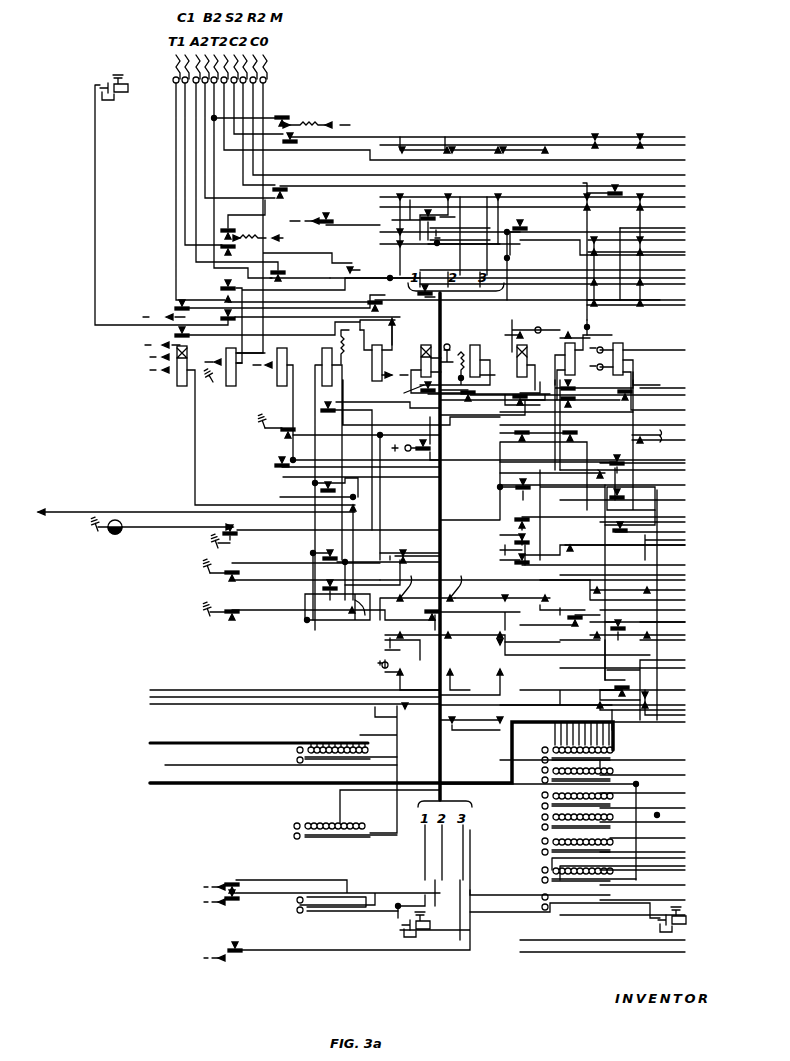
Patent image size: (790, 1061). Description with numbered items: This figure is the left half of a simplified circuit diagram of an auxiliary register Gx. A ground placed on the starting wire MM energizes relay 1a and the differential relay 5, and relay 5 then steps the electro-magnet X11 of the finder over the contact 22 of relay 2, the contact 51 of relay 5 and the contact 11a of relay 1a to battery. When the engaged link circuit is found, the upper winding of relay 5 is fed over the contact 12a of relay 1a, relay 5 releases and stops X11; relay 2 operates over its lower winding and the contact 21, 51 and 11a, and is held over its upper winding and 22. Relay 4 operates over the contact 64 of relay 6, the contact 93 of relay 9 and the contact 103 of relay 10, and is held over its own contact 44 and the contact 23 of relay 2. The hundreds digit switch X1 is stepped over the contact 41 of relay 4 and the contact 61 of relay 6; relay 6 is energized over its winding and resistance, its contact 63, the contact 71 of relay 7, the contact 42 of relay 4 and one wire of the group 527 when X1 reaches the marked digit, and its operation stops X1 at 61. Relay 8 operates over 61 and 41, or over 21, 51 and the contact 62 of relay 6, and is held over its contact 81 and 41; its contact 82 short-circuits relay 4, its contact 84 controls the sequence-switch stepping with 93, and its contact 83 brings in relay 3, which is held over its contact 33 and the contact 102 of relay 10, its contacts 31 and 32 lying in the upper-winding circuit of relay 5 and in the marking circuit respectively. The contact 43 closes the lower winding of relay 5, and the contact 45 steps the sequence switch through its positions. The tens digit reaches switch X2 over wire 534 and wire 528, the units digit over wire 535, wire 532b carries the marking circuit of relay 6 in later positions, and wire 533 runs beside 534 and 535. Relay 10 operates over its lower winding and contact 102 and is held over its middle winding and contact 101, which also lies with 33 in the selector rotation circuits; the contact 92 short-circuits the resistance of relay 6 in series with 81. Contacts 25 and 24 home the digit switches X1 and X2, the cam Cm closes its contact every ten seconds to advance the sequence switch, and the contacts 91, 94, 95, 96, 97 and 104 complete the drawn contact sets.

The relay 1a is at (252, 425).
The relay 2 is at (234, 358).
The relay 3 is at (346, 405).
The relay 4 is at (405, 480).
The differential relay 5 is at (381, 350).
The relay 6 is at (435, 382).
The relay 7 is at (459, 356).
The relay 8 is at (532, 355).
The relay 9 is at (582, 360).
The relay 10 is at (637, 367).
The contact of relay 1a 11a is at (264, 305).
The contact of relay 1a 12a is at (249, 341).
The contact of relay 2 21 is at (252, 220).
The contact of relay 2 22 is at (239, 251).
The contact of relay 2 23 is at (324, 529).
The contact of relay 2 24 is at (318, 610).
The contact of relay 2 25 is at (227, 904).
The contact of relay 3 31 is at (312, 114).
The contact of relay 3 32 is at (484, 133).
The contact of relay 3 33 is at (479, 194).
The contact of relay 4 41 is at (335, 226).
The contact of relay 4 42 is at (375, 456).
The contact of relay 4 43 is at (319, 489).
The contact of relay 4 44 is at (376, 579).
The contact of relay 4 45 is at (352, 590).
The contact of relay 5 51 is at (520, 297).
The contact of relay 6 61 is at (460, 228).
The contact of relay 6 62 is at (418, 542).
The contact of relay 6 63 is at (466, 393).
The contact of relay 6 64 is at (462, 618).
The contact of relay 7 71 is at (457, 387).
The contact of relay 8 81 is at (595, 237).
The contact of relay 8 82 is at (547, 327).
The contact of relay 8 83 is at (552, 515).
The contact of relay 8 84 is at (592, 549).
The contact 91 is at (562, 323).
The contact of relay 9 92 is at (566, 406).
The contact of relay 9 93 is at (517, 587).
The contact 94 is at (519, 593).
The contact 95 is at (554, 593).
The contact 96 is at (636, 585).
The contact 97 is at (642, 590).
The contact of relay 10 101 is at (616, 184).
The contact of relay 10 102 is at (592, 459).
The contact of relay 10 103 is at (642, 535).
The contact 104 is at (645, 605).
The group of wires 527 is at (244, 743).
The wire 528 is at (366, 757).
The wire 532b is at (258, 765).
The conductor 533 is at (280, 683).
The wire 534 is at (264, 691).
The wire 535 is at (280, 703).
The digit switch X1 is at (428, 908).
The digit switch X2 is at (687, 919).
The finder electro-magnet X11 is at (161, 200).
The cam Cm is at (161, 533).
The starting wire MM is at (189, 505).